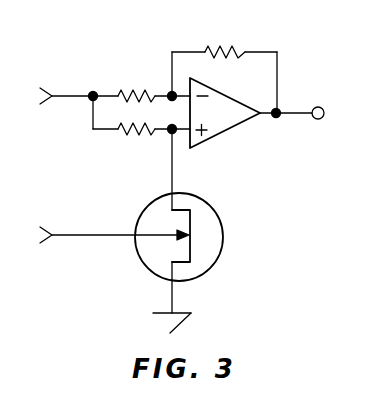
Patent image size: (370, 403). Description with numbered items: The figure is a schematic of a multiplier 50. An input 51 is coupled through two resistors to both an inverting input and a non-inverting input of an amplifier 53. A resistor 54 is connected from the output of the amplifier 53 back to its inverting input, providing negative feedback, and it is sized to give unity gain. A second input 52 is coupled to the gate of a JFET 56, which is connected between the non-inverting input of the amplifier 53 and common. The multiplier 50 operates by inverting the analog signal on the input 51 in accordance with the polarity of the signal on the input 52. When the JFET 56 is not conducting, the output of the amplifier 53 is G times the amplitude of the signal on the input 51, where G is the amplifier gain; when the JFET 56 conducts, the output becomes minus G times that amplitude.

The multiplier 50 is at (97, 53).
The input 51 is at (55, 97).
The input 52 is at (53, 236).
The amplifier 53 is at (212, 137).
The resistor 54 is at (228, 42).
The JFET 56 is at (224, 235).